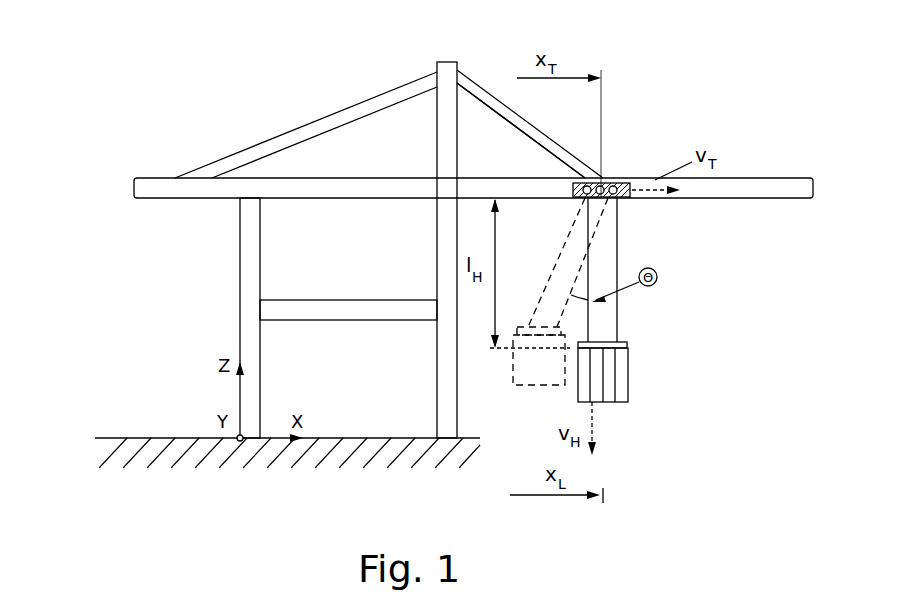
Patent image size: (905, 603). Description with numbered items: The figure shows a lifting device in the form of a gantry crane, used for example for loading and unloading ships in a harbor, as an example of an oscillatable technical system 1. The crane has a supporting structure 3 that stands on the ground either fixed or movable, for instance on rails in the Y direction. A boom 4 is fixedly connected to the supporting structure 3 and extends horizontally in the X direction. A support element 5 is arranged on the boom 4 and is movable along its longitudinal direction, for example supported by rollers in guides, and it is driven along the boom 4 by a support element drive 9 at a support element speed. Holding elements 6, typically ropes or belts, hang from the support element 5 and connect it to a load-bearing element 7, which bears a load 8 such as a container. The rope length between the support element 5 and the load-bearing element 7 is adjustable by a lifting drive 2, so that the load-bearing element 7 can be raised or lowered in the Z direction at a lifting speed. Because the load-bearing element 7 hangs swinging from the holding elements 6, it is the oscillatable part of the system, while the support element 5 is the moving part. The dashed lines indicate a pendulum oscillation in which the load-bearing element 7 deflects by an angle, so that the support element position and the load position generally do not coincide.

The oscillatable technical system 1 is at (204, 66).
The lifting drive 2 is at (632, 181).
The supporting structure 3 is at (250, 239).
The boom 4 is at (777, 188).
The support element 5 is at (570, 183).
The holding elements 6 is at (619, 236).
The load-bearing element 7 is at (628, 345).
The load 8 is at (608, 368).
The support element drive 9 is at (606, 180).